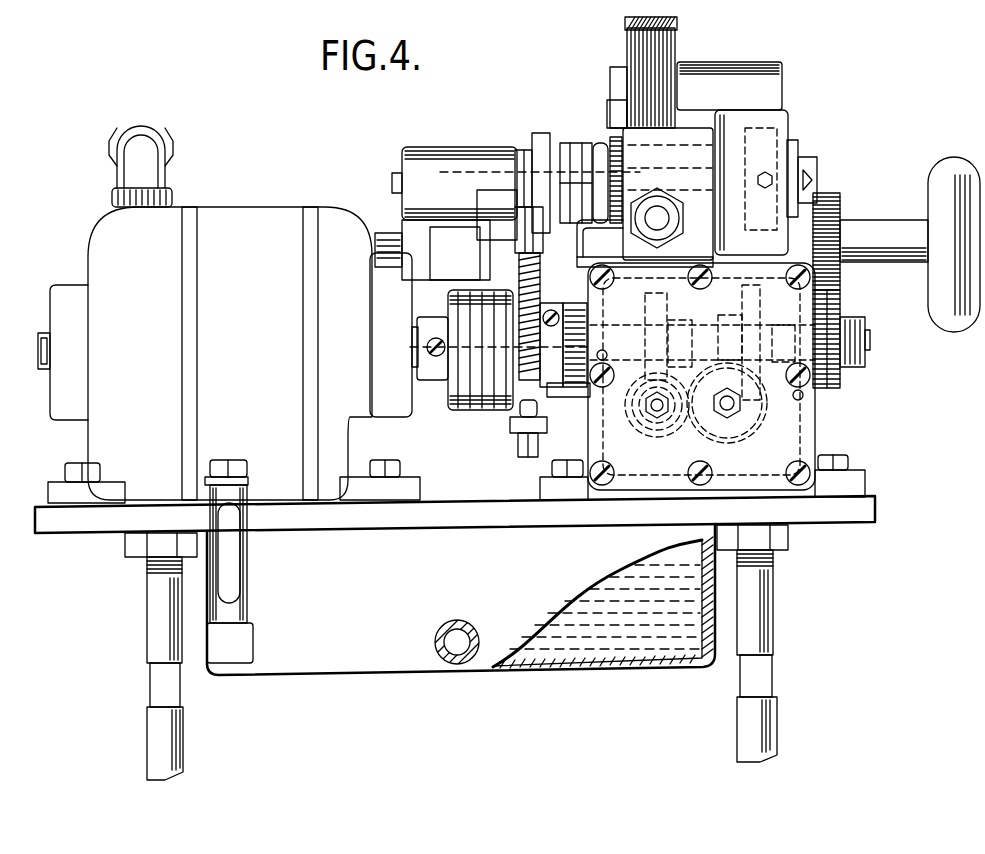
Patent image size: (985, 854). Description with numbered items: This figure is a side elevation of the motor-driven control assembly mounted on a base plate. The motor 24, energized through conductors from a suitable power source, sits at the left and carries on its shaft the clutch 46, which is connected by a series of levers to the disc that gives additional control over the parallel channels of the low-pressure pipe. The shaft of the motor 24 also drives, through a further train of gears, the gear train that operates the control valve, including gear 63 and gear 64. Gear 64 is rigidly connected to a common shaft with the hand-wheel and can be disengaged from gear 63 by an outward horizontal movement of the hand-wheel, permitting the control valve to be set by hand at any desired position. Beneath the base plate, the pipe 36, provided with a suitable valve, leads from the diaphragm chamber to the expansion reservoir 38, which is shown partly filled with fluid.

The motor 24 is at (244, 224).
The clutch 46 is at (477, 404).
The pipe 36 is at (469, 662).
The expansion reservoir 38 is at (637, 636).
The gear 64 is at (838, 211).
The gear 63 is at (840, 378).